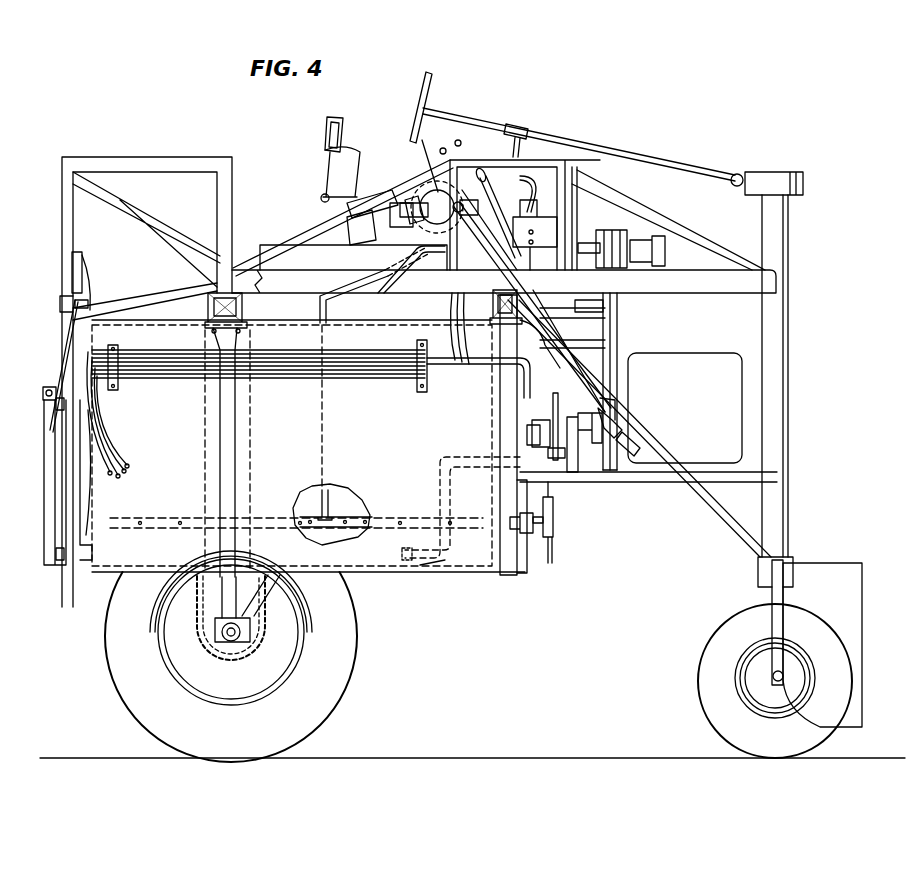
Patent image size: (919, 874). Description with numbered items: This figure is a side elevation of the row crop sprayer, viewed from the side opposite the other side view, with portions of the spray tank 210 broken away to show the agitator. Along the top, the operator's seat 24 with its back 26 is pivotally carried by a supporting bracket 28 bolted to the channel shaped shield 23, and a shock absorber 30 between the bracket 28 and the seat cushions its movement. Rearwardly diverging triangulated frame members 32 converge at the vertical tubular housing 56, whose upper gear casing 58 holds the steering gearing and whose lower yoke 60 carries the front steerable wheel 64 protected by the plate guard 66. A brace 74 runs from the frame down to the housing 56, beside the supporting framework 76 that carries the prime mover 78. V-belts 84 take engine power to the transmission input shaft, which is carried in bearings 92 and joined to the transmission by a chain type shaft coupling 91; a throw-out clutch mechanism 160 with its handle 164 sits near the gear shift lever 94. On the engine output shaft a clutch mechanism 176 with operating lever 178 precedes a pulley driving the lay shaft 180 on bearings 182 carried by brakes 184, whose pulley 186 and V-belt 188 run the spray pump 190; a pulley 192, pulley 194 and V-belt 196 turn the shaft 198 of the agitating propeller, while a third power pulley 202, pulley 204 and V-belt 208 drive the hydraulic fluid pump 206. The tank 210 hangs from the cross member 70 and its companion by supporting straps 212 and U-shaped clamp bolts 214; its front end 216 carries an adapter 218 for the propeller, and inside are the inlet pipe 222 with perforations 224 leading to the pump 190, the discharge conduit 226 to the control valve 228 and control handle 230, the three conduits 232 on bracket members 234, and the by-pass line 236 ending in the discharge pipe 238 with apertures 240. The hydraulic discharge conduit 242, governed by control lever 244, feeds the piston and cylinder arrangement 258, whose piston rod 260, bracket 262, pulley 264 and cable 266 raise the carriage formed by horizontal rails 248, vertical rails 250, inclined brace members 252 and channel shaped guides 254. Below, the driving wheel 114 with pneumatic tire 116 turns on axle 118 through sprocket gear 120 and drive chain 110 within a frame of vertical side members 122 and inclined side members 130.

The channel shaped shield 23 is at (305, 250).
The operator's seat 24 is at (357, 160).
The back 26 is at (332, 118).
The supporting bracket 28 is at (377, 196).
The shock absorber 30 is at (320, 198).
The frame members 32 is at (593, 165).
The tubular housing 56 is at (790, 407).
The gear casing 58 is at (798, 194).
The yoke 60 is at (772, 597).
The front steerable wheel 64 is at (715, 648).
The plate guard 66 is at (852, 622).
The cross member 70 is at (248, 310).
The brace 74 is at (700, 492).
The supporting framework 76 is at (640, 482).
The prime mover 78 is at (718, 365).
The V-belts 84 is at (620, 368).
The shaft coupling 91 is at (585, 240).
The bearings 92 is at (662, 243).
The gear shift lever 94 is at (526, 180).
The drive chain 110 is at (185, 594).
The driving wheel 114 is at (285, 652).
The pneumatic tire 116 is at (325, 692).
The axle 118 is at (236, 646).
The sprocket gear 120 is at (262, 632).
The vertical side members 122 is at (252, 580).
The inclined side members 130 is at (275, 593).
The throw-out clutch mechanism 160 is at (614, 232).
The handle 164 is at (470, 168).
The clutch mechanism 176 is at (577, 468).
The operating lever 178 is at (522, 258).
The lay shaft 180 is at (522, 428).
The bearings 182 is at (530, 438).
The brakes 184 is at (556, 503).
The pulley 186 is at (550, 452).
The V-belt 188 is at (556, 455).
The spray pump 190 is at (628, 436).
The pulley 192 is at (616, 416).
The pulley 194 is at (554, 535).
The V-belt 196 is at (548, 562).
The shaft 198 is at (526, 512).
The third power pulley 202 is at (592, 398).
The pulley 204 is at (542, 348).
The hydraulic fluid pump 206 is at (600, 326).
The V-belt 208 is at (532, 385).
The liquid spray tank 210 is at (492, 578).
The supporting straps 212 is at (236, 425).
The U-shaped clamp bolts 214 is at (210, 316).
The front end of the tank 216 is at (520, 568).
The adapter 218 is at (520, 523).
The inlet pipe 222 is at (440, 503).
The perforations 224 is at (435, 568).
The discharge conduit 226 is at (587, 365).
The control valve 228 is at (435, 192).
The control handle 230 is at (455, 142).
The conduits 232 is at (430, 372).
The bracket members 234 is at (418, 385).
The by-pass line 236 is at (345, 298).
The discharge pipe 238 is at (352, 500).
The apertures 240 is at (312, 518).
The discharge conduit 242 is at (418, 360).
The control lever 244 is at (442, 250).
The horizontal rails 248 is at (56, 408).
The vertical rails 250 is at (58, 432).
The inclined brace members 252 is at (46, 400).
The channel shaped guides 254 is at (76, 485).
The piston and cylinder arrangement 258 is at (72, 308).
The piston rod 260 is at (88, 300).
The bracket 262 is at (72, 262).
The pulley 264 is at (90, 268).
The cable 266 is at (62, 357).